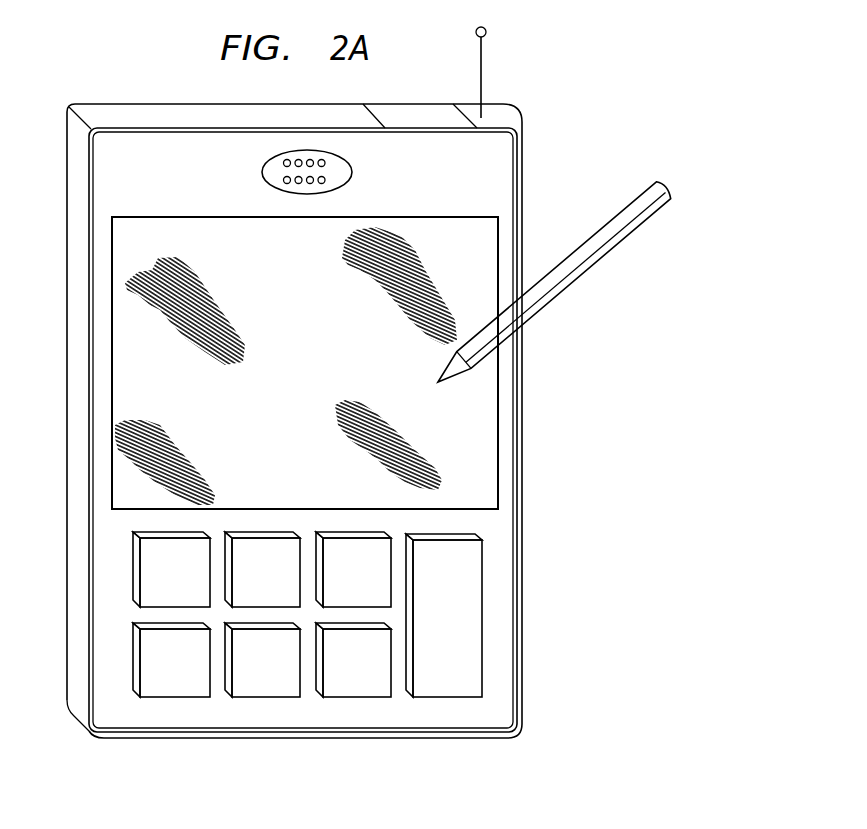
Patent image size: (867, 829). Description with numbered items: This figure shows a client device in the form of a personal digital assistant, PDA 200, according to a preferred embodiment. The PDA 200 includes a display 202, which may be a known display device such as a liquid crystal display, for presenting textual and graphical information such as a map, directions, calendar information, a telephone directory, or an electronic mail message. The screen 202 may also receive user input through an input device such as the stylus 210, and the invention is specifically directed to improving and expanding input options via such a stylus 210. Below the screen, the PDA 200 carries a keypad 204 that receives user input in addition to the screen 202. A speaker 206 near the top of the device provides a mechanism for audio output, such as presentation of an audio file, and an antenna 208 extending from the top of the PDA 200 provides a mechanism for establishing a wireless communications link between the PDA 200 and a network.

The PDA 200 is at (523, 213).
The display 202 is at (331, 364).
The keypad 204 is at (530, 529).
The speaker 206 is at (352, 172).
The antenna 208 is at (482, 80).
The stylus 210 is at (668, 190).